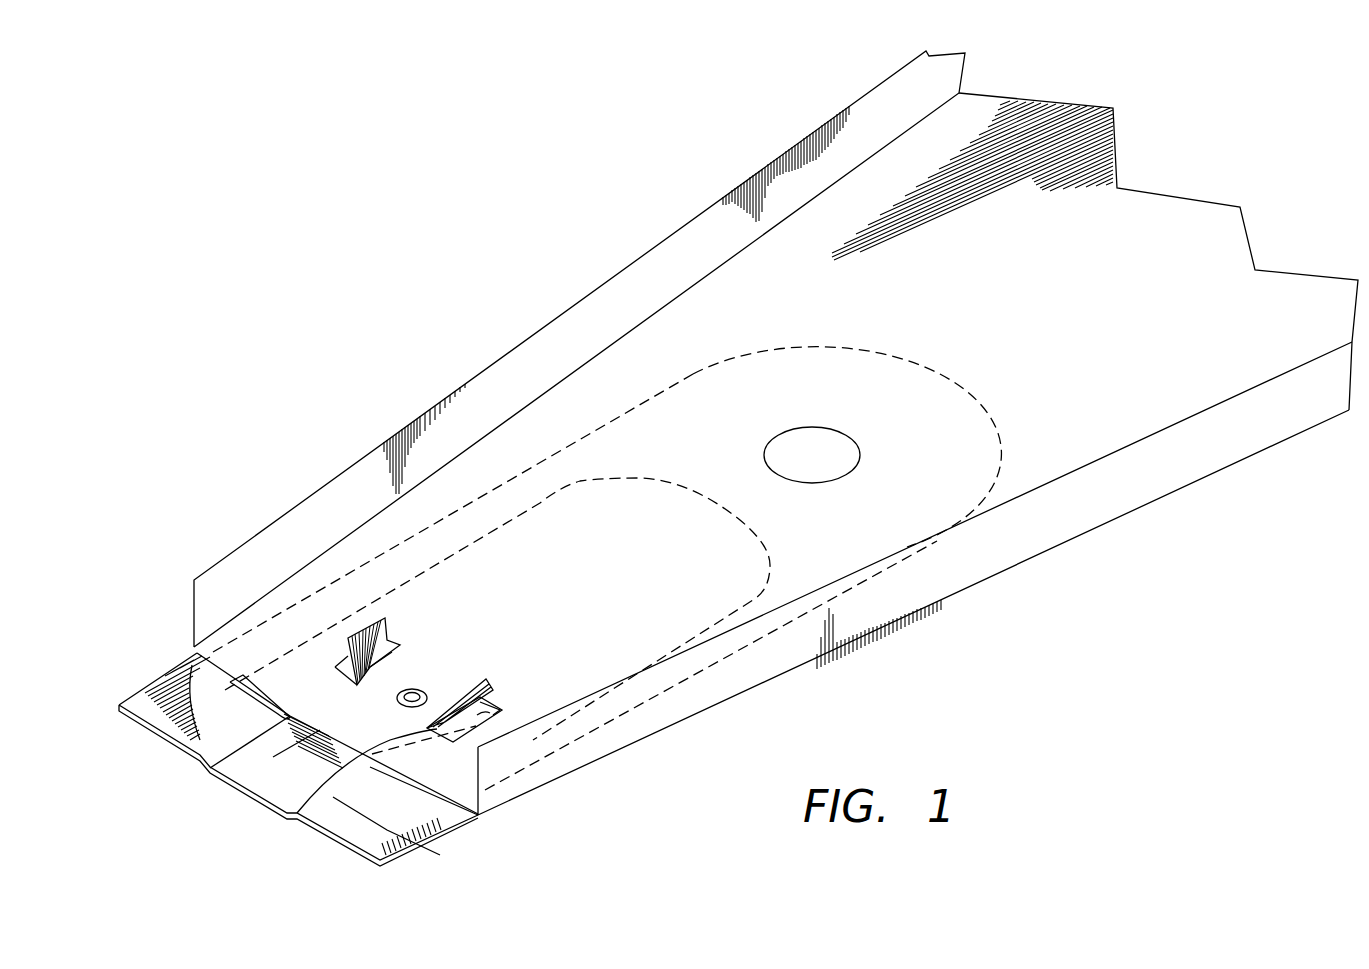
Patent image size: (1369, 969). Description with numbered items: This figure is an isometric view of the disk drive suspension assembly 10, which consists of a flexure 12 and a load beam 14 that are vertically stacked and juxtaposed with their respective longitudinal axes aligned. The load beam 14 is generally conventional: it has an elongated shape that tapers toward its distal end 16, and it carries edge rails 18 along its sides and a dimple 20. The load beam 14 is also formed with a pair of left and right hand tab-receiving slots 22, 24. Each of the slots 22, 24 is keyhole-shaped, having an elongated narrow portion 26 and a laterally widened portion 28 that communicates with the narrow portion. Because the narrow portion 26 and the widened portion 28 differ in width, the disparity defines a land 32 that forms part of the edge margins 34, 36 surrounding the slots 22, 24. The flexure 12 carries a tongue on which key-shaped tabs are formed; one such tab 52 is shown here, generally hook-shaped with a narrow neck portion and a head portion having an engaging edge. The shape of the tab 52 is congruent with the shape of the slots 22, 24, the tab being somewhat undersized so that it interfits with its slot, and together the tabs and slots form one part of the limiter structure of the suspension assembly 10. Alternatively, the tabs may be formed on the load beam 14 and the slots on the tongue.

The disk drive suspension assembly 10 is at (591, 254).
The flexure 12 is at (433, 830).
The load beam 14 is at (1188, 453).
The distal end 16 is at (200, 653).
The edge rails 18 is at (548, 358).
The dimple 20 is at (417, 692).
The left hand tab-receiving slot 22 is at (343, 687).
The right hand tab-receiving slot 24 is at (495, 712).
The elongated narrow portion 26 is at (398, 645).
The laterally widened portion 28 is at (347, 673).
The land 32 is at (405, 694).
The edge margin 34 is at (392, 615).
The edge margin 36 is at (475, 735).
The tab 52 is at (384, 617).